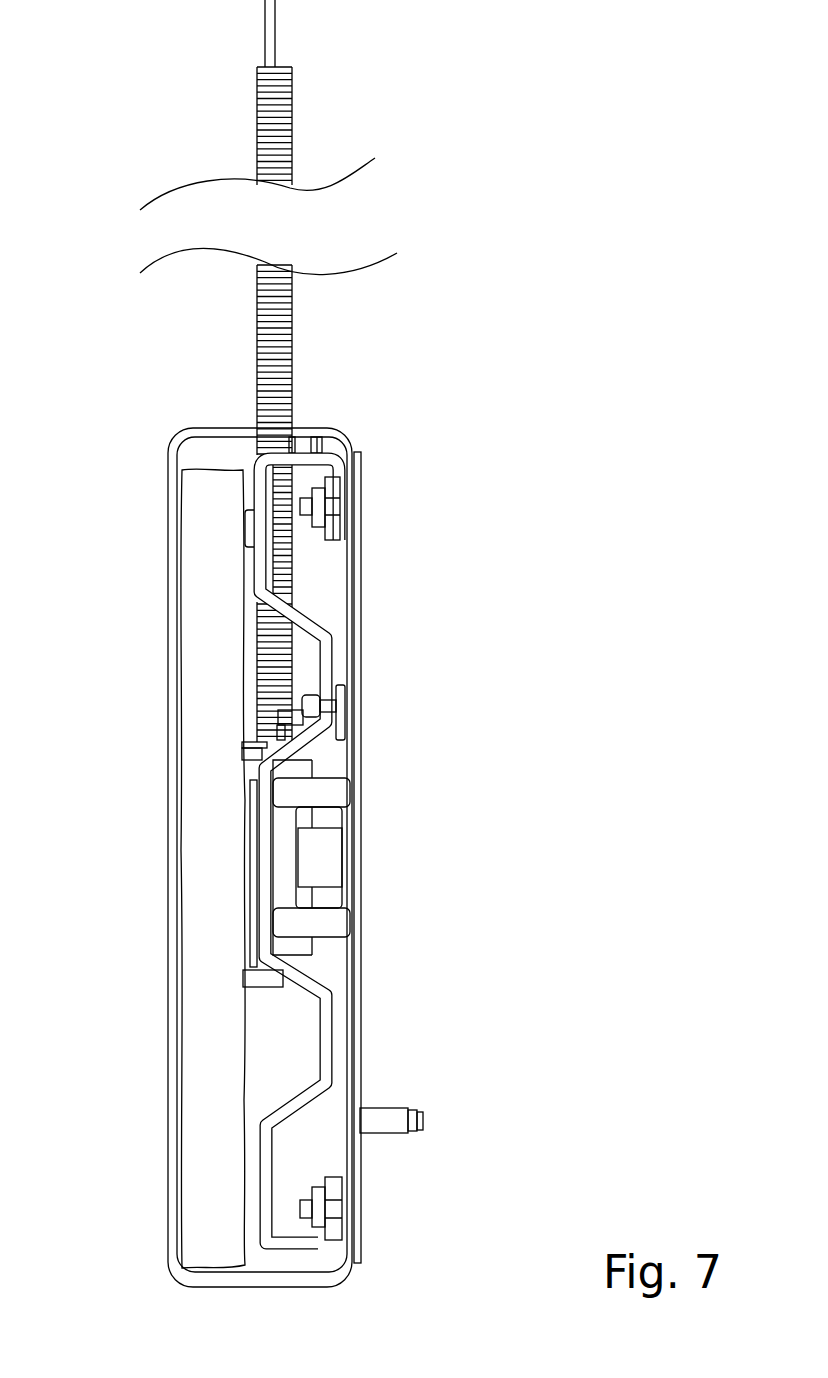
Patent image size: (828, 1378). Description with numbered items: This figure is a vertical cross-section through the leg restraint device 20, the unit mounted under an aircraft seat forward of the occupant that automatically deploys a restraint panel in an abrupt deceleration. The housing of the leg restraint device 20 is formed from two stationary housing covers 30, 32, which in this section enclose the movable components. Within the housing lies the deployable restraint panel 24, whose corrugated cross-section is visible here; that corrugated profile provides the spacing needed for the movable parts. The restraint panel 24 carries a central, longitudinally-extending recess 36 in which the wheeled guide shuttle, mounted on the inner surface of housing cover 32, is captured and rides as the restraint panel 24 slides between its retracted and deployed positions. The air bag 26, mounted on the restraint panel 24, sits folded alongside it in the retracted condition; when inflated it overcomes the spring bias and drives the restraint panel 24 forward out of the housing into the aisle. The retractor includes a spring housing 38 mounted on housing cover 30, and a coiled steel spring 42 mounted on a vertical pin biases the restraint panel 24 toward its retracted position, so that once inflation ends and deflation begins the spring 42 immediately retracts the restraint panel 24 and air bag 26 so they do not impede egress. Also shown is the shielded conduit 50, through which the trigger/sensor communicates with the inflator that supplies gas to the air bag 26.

The leg restraint device 20 is at (608, 657).
The restraint panel 24 is at (335, 643).
The air bag 26 is at (203, 555).
The housing cover 30 is at (355, 528).
The housing cover 32 is at (172, 845).
The recess 36 is at (262, 763).
The spring housing 38 is at (292, 922).
The coiled steel spring 42 is at (332, 848).
The shielded conduit 50 is at (267, 100).